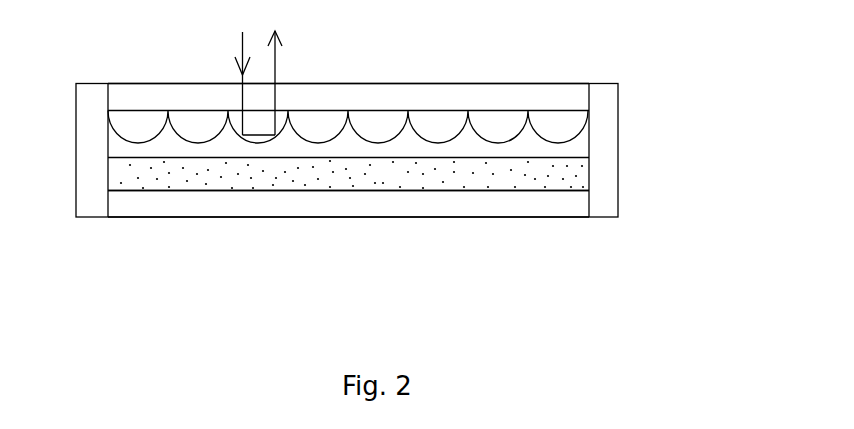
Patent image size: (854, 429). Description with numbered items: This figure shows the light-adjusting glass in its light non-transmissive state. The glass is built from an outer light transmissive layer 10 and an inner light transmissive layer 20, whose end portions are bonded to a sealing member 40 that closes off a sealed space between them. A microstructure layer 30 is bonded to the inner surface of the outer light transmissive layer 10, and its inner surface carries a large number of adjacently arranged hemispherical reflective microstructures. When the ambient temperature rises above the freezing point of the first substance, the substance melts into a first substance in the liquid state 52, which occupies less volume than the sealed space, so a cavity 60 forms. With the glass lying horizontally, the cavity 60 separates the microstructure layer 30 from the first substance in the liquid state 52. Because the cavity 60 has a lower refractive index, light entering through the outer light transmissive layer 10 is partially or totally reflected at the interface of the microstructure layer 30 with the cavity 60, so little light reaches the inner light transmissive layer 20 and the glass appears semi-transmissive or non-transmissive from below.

The outer light transmissive layer 10 is at (572, 98).
The inner light transmissive layer 20 is at (565, 207).
The microstructure layer 30 is at (433, 117).
The sealing member 40 is at (606, 135).
The first substance in the liquid state 52 is at (394, 177).
The cavity 60 is at (292, 148).